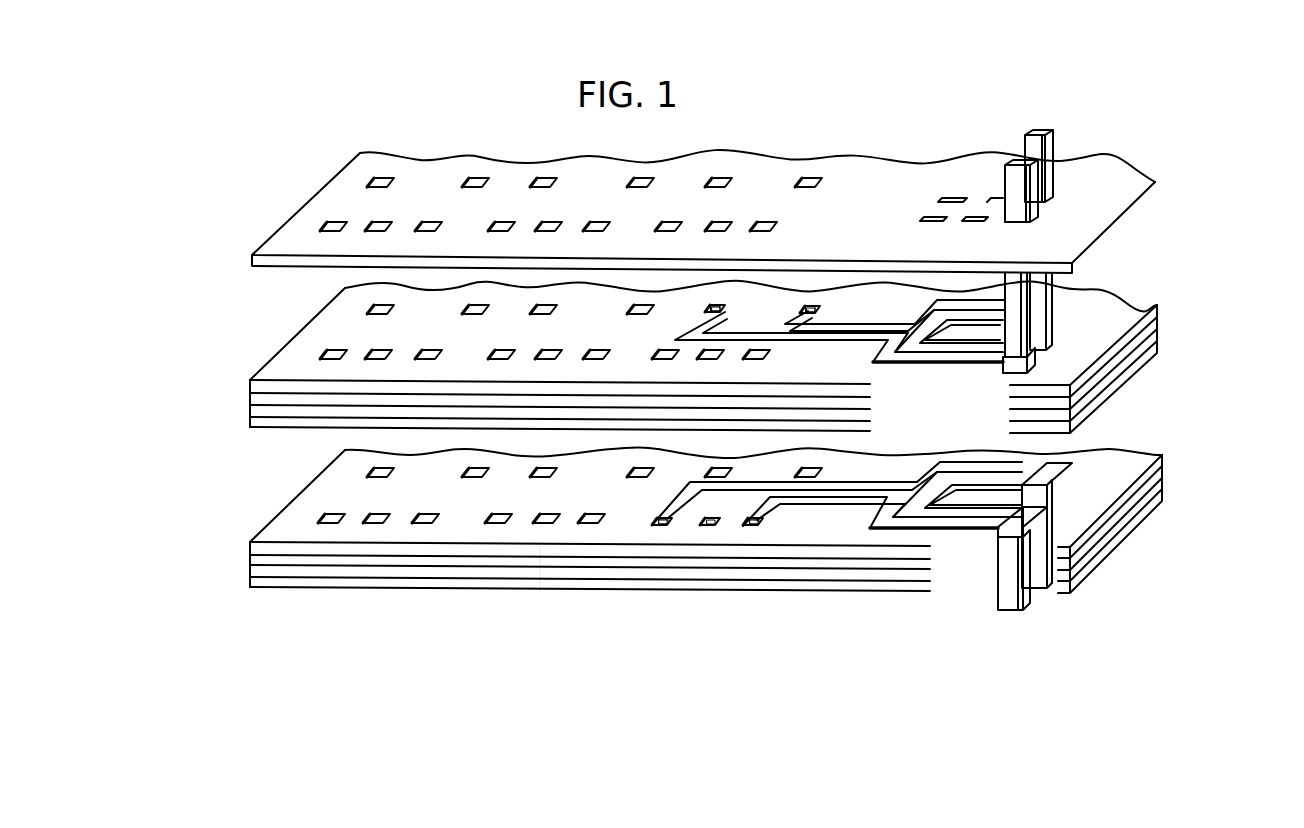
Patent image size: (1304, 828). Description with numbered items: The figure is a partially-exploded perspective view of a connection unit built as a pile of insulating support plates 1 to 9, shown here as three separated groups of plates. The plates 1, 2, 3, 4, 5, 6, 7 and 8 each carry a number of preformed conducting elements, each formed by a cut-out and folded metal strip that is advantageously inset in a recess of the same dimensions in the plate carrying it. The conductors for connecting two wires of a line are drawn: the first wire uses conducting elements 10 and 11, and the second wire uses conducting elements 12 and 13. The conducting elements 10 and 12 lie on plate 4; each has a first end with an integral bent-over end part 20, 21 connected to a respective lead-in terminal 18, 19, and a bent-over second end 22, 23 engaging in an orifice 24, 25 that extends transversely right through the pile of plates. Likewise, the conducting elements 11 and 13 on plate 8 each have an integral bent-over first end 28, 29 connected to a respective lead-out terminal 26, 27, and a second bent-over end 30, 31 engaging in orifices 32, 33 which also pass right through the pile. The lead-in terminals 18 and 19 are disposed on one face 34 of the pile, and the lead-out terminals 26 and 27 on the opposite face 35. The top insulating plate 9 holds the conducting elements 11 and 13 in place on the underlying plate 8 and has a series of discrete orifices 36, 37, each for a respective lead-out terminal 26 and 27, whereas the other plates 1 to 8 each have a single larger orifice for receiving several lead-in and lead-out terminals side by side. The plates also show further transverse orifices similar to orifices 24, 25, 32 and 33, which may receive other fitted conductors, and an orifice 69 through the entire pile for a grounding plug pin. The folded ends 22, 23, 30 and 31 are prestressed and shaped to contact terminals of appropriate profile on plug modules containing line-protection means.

The insulating support plate 1 is at (257, 583).
The insulating support plate 2 is at (250, 572).
The insulating support plate 3 is at (250, 560).
The insulating support plate 4 is at (250, 546).
The insulating support plate 5 is at (250, 424).
The insulating support plate 6 is at (250, 412).
The insulating support plate 7 is at (250, 400).
The insulating support plate 8 is at (250, 384).
The insulating plate 9 is at (665, 204).
The preformed conducting element 10 is at (878, 505).
The preformed conducting element 11 is at (870, 323).
The preformed conducting element 12 is at (872, 480).
The preformed conducting element 13 is at (873, 341).
The lead-in terminal 18 is at (1081, 586).
The lead-in terminal 19 is at (1042, 530).
The bent-over end part 20 is at (1015, 532).
The bent-over end part 21 is at (1060, 498).
The bent-over second end 22 is at (762, 527).
The bent-over second end 23 is at (668, 527).
The orifice 24 is at (750, 527).
The orifice 25 is at (656, 525).
The lead-out terminal 26 is at (1042, 152).
The lead-out terminal 27 is at (1017, 187).
The bent-over first end 28 is at (1050, 332).
The bent-over first end 29 is at (1157, 346).
The bent-over end 30 is at (809, 305).
The bent-over end 31 is at (710, 309).
The orifice 32 is at (815, 309).
The orifice 33 is at (722, 309).
The face of the pile 34 is at (513, 566).
The opposite face of the pile 35 is at (860, 190).
The discrete orifice 36 is at (1042, 213).
The discrete orifice 37 is at (1032, 240).
The orifice 69 is at (710, 527).